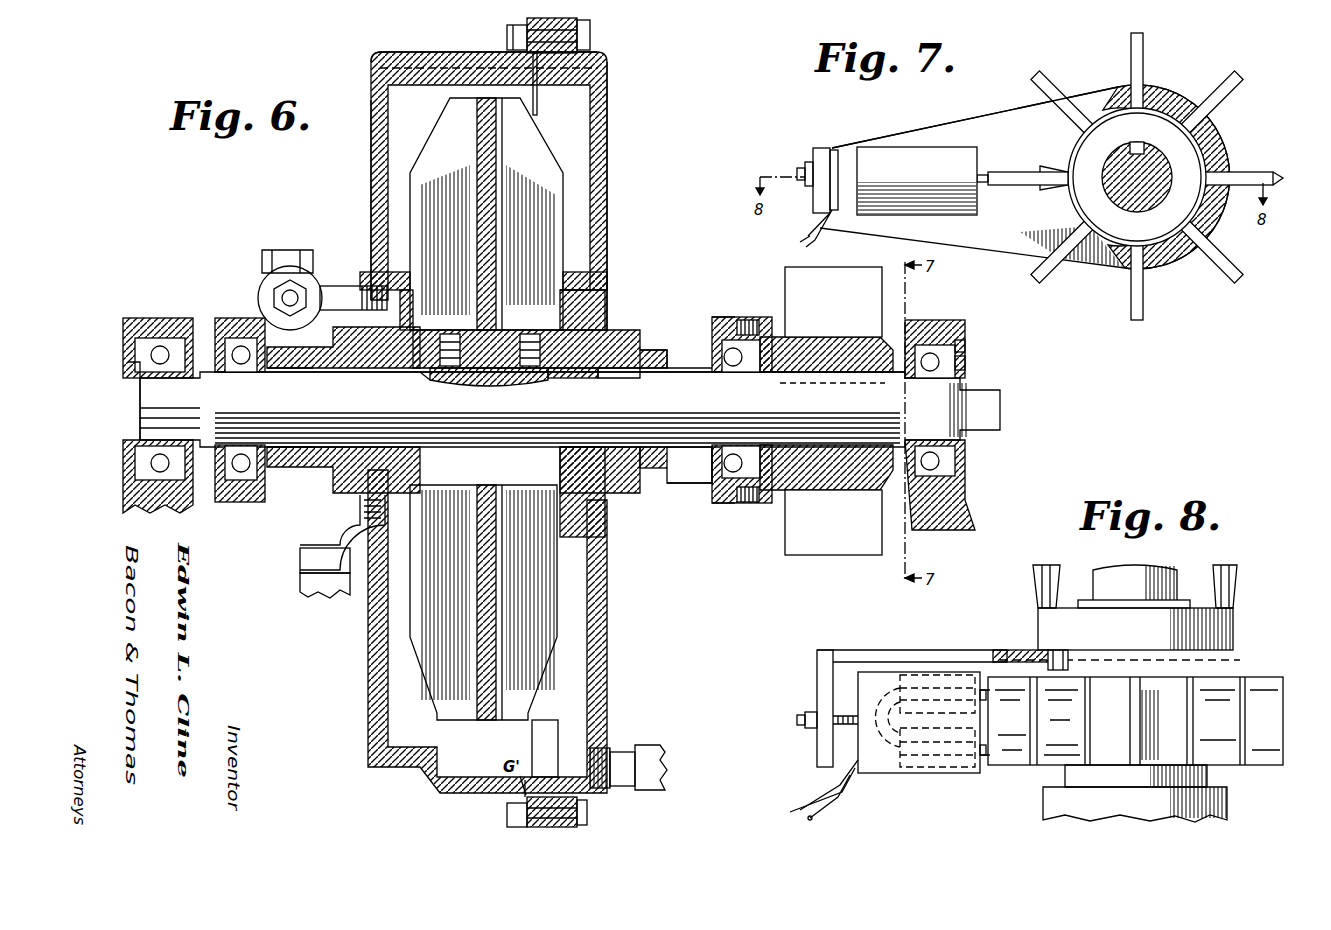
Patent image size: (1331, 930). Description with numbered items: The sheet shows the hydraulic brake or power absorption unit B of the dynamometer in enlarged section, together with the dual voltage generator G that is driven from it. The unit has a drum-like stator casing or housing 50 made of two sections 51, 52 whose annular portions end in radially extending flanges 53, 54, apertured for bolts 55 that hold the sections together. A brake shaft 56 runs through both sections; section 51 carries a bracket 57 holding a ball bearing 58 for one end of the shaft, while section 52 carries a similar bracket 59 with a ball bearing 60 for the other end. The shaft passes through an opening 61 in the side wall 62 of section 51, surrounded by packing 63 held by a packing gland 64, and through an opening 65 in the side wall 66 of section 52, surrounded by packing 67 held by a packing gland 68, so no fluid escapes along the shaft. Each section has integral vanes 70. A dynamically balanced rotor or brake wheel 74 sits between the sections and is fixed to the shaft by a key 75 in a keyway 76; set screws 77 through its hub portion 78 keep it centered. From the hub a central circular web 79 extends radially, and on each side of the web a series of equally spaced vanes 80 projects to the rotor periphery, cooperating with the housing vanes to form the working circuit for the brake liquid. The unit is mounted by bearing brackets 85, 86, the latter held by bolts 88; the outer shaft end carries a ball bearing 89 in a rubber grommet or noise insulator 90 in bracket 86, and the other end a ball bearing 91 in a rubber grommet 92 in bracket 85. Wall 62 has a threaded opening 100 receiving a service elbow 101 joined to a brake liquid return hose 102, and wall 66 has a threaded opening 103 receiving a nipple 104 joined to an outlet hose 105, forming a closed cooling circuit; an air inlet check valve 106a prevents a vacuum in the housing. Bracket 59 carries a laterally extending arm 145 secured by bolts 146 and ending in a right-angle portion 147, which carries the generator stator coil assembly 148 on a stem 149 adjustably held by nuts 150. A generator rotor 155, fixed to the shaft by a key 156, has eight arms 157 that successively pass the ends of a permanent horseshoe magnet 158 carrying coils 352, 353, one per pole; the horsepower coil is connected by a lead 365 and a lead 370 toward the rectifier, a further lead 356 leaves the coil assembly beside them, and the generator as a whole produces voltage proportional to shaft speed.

In FIG. 6, the stator casing or housing 50 is at (607, 110).
In FIG. 6, the housing section 51 is at (371, 70).
In FIG. 6, the housing section 52 is at (607, 152).
In FIG. 6, the radially extending flange 53 is at (527, 22).
In FIG. 6, the radially extending flange 54 is at (590, 25).
In FIG. 6, the bolts 55 is at (507, 38).
In FIG. 6, the brake shaft 56 is at (680, 370).
In FIG. 7, the brake shaft 56 is at (1137, 205).
In FIG. 8, the brake shaft 56 is at (1168, 570).
In FIG. 6, the bracket 57 is at (284, 482).
In FIG. 6, the ball bearing 58 is at (236, 502).
In FIG. 6, the bracket 59 is at (688, 483).
In FIG. 8, the bracket 59 is at (1065, 608).
In FIG. 6, the ball bearing 60 is at (722, 503).
In FIG. 6, the opening 61 is at (410, 372).
In FIG. 6, the side wall 62 is at (368, 690).
In FIG. 6, the packing 63 is at (378, 450).
In FIG. 6, the packing gland 64 is at (310, 485).
In FIG. 6, the opening 65 is at (565, 378).
In FIG. 6, the side wall 66 is at (607, 660).
In FIG. 6, the packing 67 is at (620, 372).
In FIG. 6, the packing gland 68 is at (655, 350).
In FIG. 6, the integral vanes 70 is at (395, 190).
In FIG. 6, the power absorption rotor or brake wheel 74 is at (545, 262).
In FIG. 6, the key 75 is at (497, 381).
In FIG. 6, the keyway 76 is at (432, 381).
In FIG. 6, the set screws 77 is at (446, 334).
In FIG. 6, the hub portion 78 is at (560, 322).
In FIG. 6, the central circular web 79 is at (496, 670).
In FIG. 6, the vanes 80 is at (425, 218).
In FIG. 6, the bearing bracket 85 is at (937, 322).
In FIG. 8, the bearing bracket 85 is at (1228, 808).
In FIG. 6, the bearing bracket 86 is at (140, 318).
In FIG. 6, the bolts 88 is at (125, 417).
In FIG. 6, the ball bearing 89 is at (140, 370).
In FIG. 6, the rubber grommet or noise insulator 90 is at (165, 338).
In FIG. 6, the ball bearing 91 is at (966, 366).
In FIG. 6, the rubber grommet 92 is at (966, 348).
In FIG. 6, the threaded opening 100 is at (370, 598).
In FIG. 6, the service elbow 101 is at (335, 548).
In FIG. 6, the brake liquid return hose 102 is at (300, 586).
In FIG. 6, the threaded opening 103 is at (605, 740).
In FIG. 6, the nipple 104 is at (625, 748).
In FIG. 6, the outlet hose 105 is at (666, 770).
In FIG. 6, the air inlet check valve 106a is at (270, 250).
In FIG. 6, the laterally extending arm 145 is at (750, 322).
In FIG. 7, the laterally extending arm 145 is at (1003, 117).
In FIG. 8, the laterally extending arm 145 is at (975, 652).
In FIG. 6, the bolts 146 is at (770, 320).
In FIG. 7, the bolts 146 is at (1232, 170).
In FIG. 8, the bolts 146 is at (1045, 662).
In FIG. 7, the portion 147 is at (813, 204).
In FIG. 8, the portion 147 is at (815, 660).
In FIG. 7, the generator stator coil assembly 148 is at (903, 147).
In FIG. 8, the generator stator coil assembly 148 is at (893, 773).
In FIG. 7, the stem 149 is at (836, 150).
In FIG. 8, the stem 149 is at (800, 725).
In FIG. 7, the nuts 150 is at (800, 168).
In FIG. 8, the nuts 150 is at (805, 714).
In FIG. 6, the generator rotor 155 is at (828, 338).
In FIG. 7, the generator rotor 155 is at (1195, 118).
In FIG. 8, the generator rotor 155 is at (1265, 667).
In FIG. 6, the key 156 is at (835, 384).
In FIG. 7, the key 156 is at (1140, 143).
In FIG. 6, the arms 157 is at (858, 278).
In FIG. 7, the arms 157 is at (1048, 84).
In FIG. 8, the arms 157 is at (1240, 714).
In FIG. 7, the permanent horseshoe magnet 158 is at (993, 172).
In FIG. 8, the permanent horseshoe magnet 158 is at (983, 775).
In FIG. 8, the coil 352 is at (942, 768).
In FIG. 8, the coil 353 is at (922, 672).
In FIG. 8, the lead wire 356 is at (813, 820).
In FIG. 8, the lead 365 is at (790, 812).
In FIG. 8, the lead 370 is at (800, 800).
In FIG. 6, the brake or power absorption unit B is at (360, 165).
In FIG. 7, the generator G is at (962, 118).
In FIG. 8, the generator G is at (818, 646).